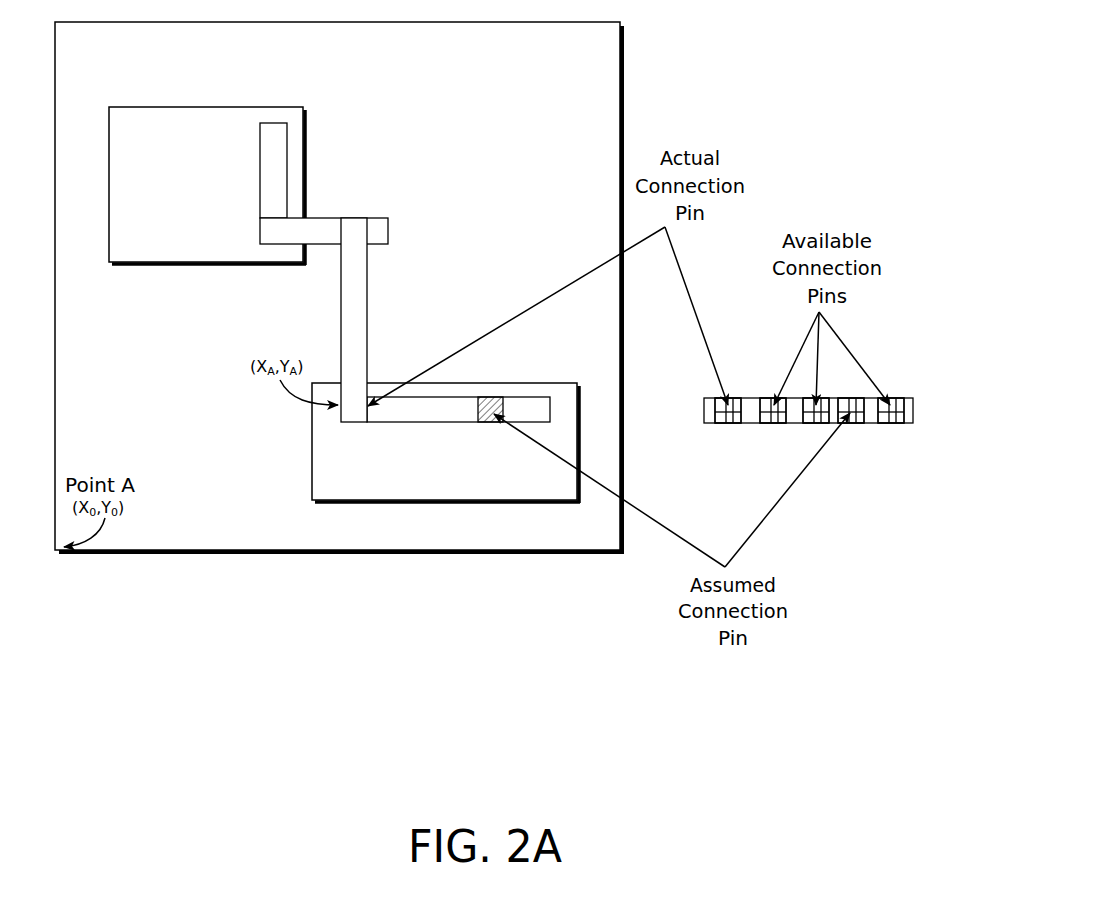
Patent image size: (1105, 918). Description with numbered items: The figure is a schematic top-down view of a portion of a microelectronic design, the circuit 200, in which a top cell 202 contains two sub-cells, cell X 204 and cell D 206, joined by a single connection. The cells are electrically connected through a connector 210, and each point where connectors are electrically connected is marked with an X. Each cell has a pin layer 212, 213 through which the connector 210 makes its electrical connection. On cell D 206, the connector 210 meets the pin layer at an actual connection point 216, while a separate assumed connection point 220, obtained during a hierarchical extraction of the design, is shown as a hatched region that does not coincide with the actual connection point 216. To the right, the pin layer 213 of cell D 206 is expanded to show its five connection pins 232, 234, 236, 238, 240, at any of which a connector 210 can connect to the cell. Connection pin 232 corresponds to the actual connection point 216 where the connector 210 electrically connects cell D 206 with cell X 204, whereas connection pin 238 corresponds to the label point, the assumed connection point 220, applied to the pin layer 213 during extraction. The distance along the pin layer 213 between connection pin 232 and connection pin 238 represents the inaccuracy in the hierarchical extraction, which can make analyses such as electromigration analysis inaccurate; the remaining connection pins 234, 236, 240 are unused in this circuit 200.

The circuit 200 is at (986, 99).
The top cell 202 is at (339, 287).
The cell X 204 is at (207, 186).
The cell D 206 is at (446, 443).
The connector 210 is at (355, 275).
The pin layer 212 is at (275, 183).
The pin layer 213 is at (458, 415).
The actual connection point 216 is at (353, 423).
The assumed connection point 220 is at (487, 413).
The connection pin 232 is at (728, 423).
The connection pin 234 is at (772, 423).
The connection pin 236 is at (815, 423).
The connection pin 238 is at (857, 423).
The connection pin 240 is at (890, 423).